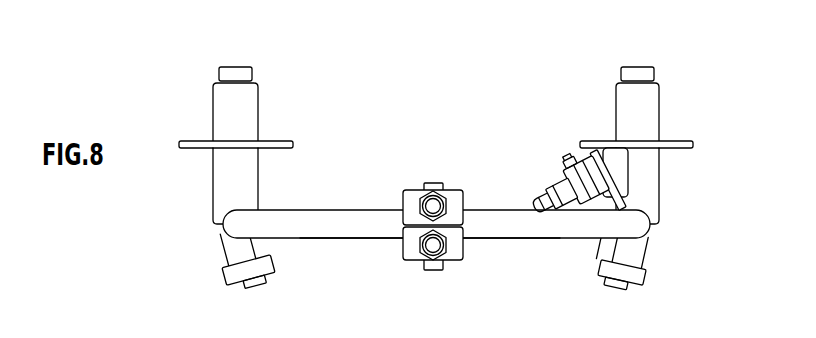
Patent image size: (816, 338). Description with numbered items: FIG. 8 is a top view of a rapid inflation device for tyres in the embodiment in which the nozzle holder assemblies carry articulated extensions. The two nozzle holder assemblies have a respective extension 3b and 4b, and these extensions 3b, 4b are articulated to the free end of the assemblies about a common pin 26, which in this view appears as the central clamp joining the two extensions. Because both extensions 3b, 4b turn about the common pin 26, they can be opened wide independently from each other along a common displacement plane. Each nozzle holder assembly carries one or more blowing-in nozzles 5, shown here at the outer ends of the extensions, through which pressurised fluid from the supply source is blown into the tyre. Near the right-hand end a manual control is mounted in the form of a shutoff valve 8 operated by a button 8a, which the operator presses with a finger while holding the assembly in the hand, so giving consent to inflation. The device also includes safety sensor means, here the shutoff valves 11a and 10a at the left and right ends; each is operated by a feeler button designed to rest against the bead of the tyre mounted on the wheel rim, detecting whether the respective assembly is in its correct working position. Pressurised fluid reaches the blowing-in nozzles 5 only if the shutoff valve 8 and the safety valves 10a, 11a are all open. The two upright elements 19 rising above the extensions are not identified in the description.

The support post 19 is at (262, 102).
The shutoff valve 11a is at (222, 268).
The shutoff valve 10a is at (653, 273).
The blowing-in nozzle 5 is at (263, 285).
The extension 4b is at (318, 218).
The extension 3b is at (528, 232).
The common pin 26 is at (442, 187).
The shutoff valve 8 is at (558, 178).
The button 8a is at (572, 155).